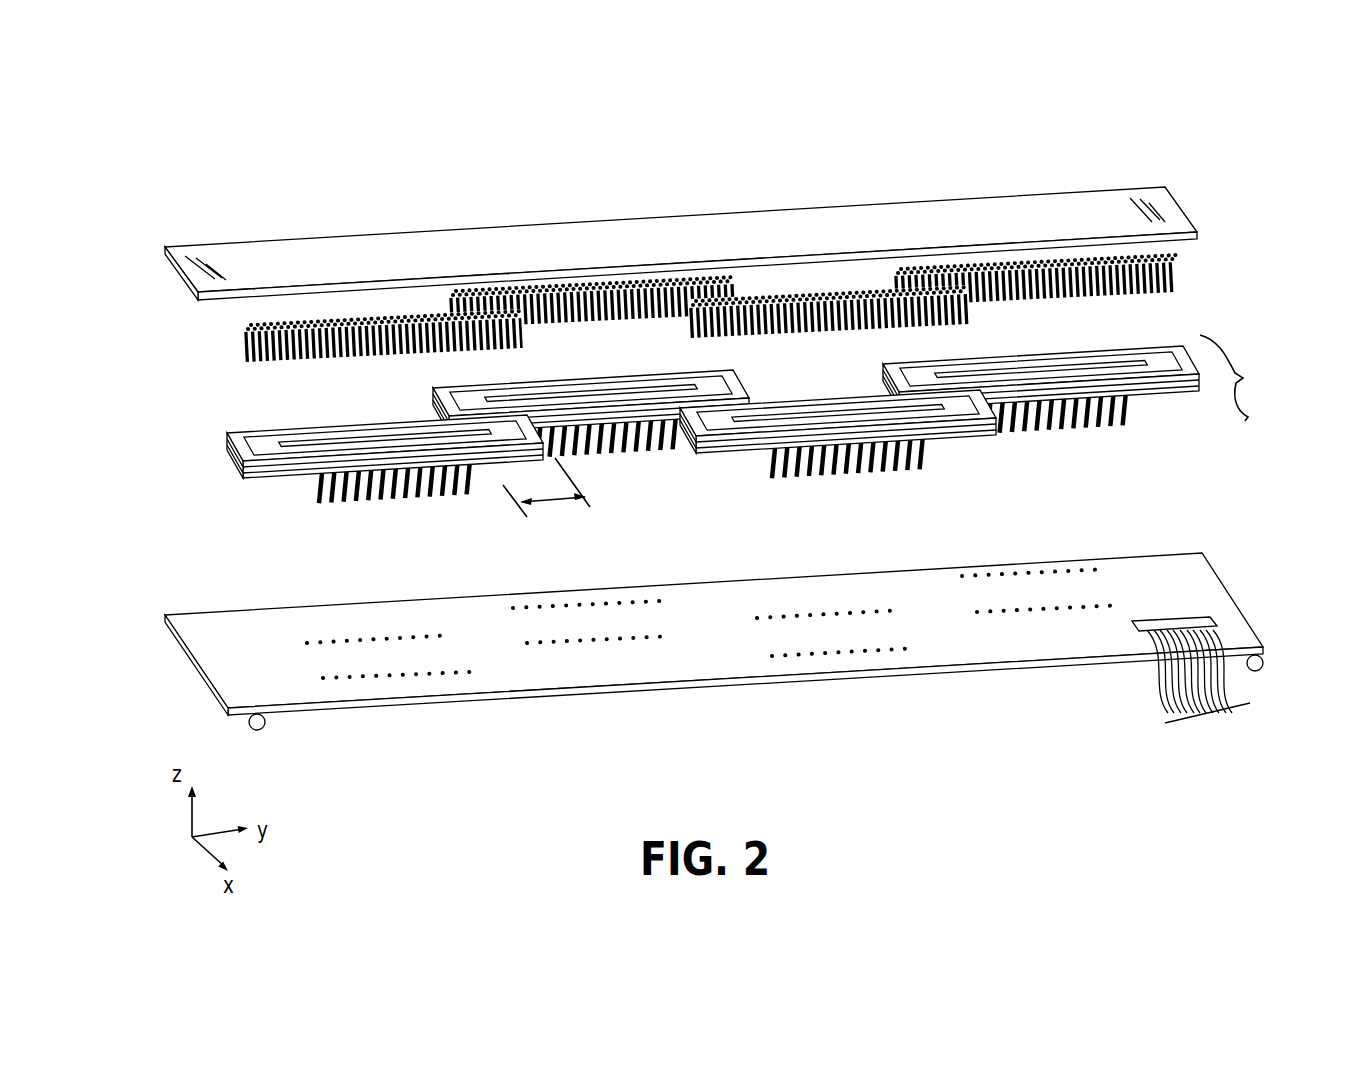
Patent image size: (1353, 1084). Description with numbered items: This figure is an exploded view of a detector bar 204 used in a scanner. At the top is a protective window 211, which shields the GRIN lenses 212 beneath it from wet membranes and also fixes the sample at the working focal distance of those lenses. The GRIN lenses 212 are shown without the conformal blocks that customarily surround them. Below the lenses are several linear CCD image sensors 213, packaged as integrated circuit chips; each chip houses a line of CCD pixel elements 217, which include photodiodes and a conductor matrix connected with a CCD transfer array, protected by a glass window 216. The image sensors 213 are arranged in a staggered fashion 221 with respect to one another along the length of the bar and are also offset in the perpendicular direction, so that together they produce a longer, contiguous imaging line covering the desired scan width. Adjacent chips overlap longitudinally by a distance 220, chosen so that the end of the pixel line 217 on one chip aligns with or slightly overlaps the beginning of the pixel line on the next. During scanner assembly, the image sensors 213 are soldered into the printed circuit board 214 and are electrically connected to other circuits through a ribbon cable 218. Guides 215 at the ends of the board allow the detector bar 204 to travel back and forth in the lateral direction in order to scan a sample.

The detector bar 204 is at (262, 183).
The protective window 211 is at (179, 270).
The GRIN lenses 212 is at (243, 348).
The linear CCD image sensors 213 is at (688, 443).
The printed circuit board 214 is at (197, 672).
The guides 215 is at (262, 733).
The glass window 216 is at (385, 413).
The CCD pixel elements 217 is at (385, 419).
The ribbon cable 218 is at (1163, 697).
The distance 220 is at (553, 503).
The staggered fashion 221 is at (1245, 378).